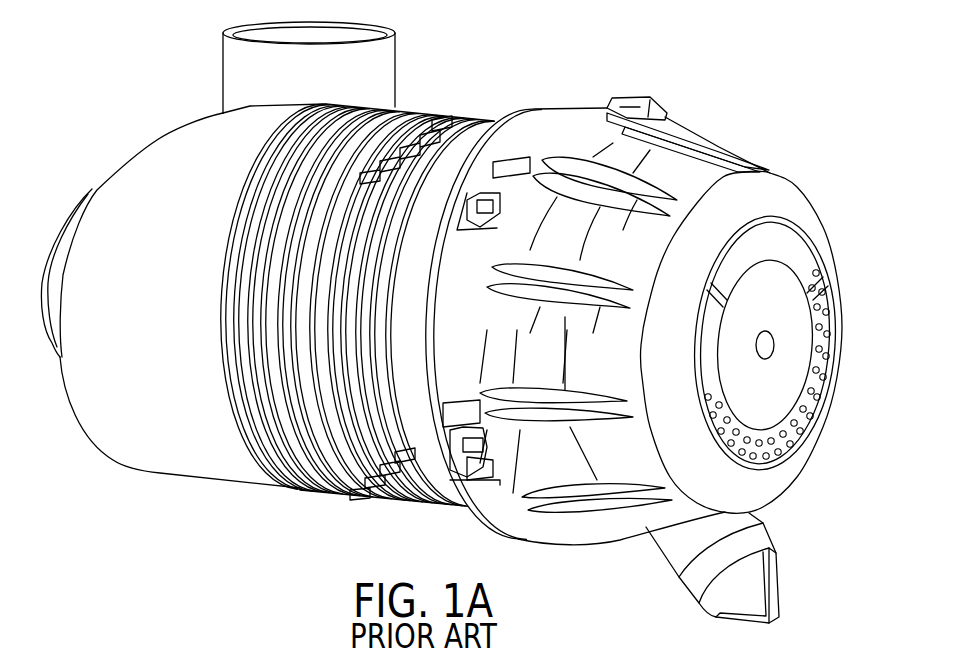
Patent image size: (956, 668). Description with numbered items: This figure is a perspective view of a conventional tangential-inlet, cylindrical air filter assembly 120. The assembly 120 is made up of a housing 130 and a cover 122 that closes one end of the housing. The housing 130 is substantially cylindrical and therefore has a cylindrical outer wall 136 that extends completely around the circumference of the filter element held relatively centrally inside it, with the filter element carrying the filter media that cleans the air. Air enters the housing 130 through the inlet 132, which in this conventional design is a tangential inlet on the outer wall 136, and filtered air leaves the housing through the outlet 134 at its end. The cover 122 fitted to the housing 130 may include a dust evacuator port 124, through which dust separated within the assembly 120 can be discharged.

The air filter assembly 120 is at (732, 97).
The cover 122 is at (799, 189).
The dust evacuator port 124 is at (667, 553).
The housing 130 is at (182, 479).
The inlet 132 is at (370, 25).
The outlet 134 is at (50, 322).
The cylindrical outer wall 136 is at (130, 427).